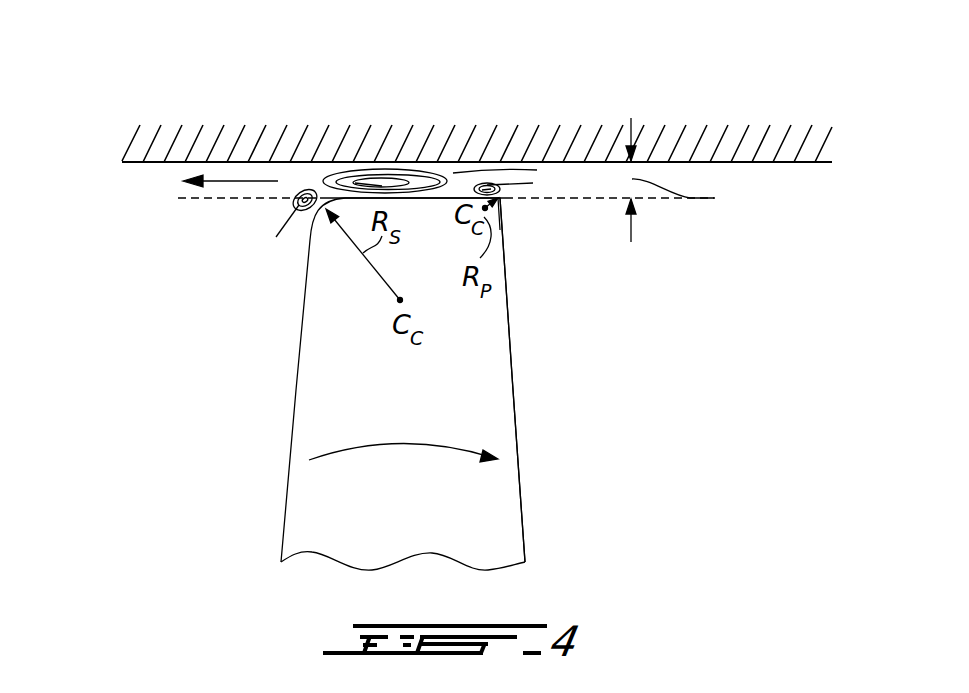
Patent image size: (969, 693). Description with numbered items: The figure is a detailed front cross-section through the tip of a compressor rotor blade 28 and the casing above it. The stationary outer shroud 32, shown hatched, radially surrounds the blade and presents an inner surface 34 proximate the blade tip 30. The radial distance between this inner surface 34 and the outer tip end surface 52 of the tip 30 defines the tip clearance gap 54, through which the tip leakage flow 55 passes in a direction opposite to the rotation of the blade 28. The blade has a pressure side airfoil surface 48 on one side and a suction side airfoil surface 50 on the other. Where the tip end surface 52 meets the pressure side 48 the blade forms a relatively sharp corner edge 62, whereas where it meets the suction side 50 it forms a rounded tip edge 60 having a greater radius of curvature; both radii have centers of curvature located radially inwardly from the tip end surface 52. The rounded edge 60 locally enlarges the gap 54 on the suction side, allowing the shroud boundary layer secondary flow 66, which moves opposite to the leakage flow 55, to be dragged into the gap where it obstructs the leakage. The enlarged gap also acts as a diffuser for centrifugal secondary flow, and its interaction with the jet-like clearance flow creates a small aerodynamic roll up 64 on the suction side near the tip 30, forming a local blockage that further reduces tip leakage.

The rotor blade 28 is at (413, 540).
The blade tip 30 is at (418, 178).
The stationary outer shroud 32 is at (604, 118).
The inner surface 34 is at (672, 162).
The pressure side airfoil surface 48 is at (516, 392).
The suction side airfoil surface 50 is at (292, 445).
The outer tip end surface 52 is at (455, 198).
The tip clearance gap 54 is at (693, 196).
The tip leakage flow 55 is at (237, 181).
The rounded tip edge 60 is at (298, 222).
The sharp corner edge 62 is at (514, 203).
The aerodynamic roll up 64 is at (301, 187).
The shroud boundary layer secondary flow 66 is at (367, 170).